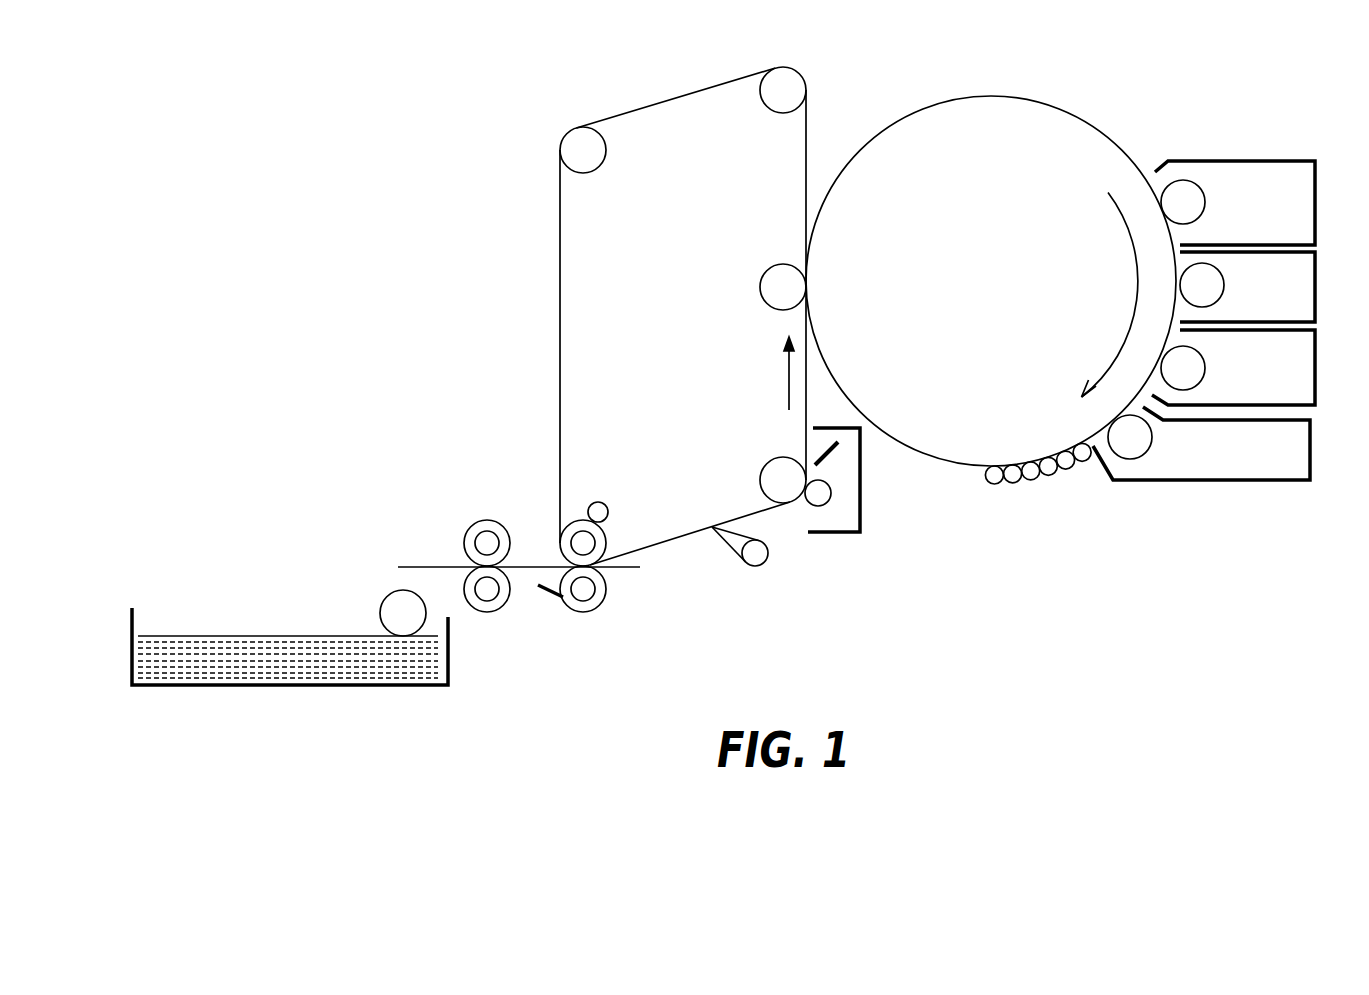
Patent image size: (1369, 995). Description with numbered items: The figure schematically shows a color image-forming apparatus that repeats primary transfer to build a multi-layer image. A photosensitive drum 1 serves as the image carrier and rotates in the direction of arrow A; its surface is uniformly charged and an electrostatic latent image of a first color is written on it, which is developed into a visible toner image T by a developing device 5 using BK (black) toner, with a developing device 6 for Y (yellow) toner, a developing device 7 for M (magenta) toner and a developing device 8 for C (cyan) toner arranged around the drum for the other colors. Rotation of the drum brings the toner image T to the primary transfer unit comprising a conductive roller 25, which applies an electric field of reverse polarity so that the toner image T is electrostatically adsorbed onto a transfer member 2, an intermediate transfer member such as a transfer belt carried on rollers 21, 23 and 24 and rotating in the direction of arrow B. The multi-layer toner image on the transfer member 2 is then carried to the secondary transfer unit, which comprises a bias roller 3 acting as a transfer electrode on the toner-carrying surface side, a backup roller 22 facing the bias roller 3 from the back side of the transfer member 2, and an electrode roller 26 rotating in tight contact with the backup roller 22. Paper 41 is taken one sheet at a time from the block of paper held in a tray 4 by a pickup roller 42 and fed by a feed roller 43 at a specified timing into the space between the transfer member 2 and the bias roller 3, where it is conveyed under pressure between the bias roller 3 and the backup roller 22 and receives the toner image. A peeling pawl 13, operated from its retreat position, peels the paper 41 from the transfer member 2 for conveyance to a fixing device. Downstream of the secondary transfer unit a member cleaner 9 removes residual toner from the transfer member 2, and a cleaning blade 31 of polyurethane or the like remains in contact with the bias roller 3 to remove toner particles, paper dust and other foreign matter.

The photosensitive drum 1 is at (1108, 137).
The transfer member 2 is at (558, 282).
The bias roller 3 is at (602, 600).
The tray 4 is at (335, 688).
The developing device 5 is at (1316, 206).
The developing device 6 is at (1316, 286).
The developing device 7 is at (1316, 366).
The developing device 8 is at (1311, 438).
The member cleaner 9 is at (863, 508).
The peeling pawl 13 is at (770, 558).
The roller 21 is at (798, 72).
The backup roller 22 is at (575, 520).
The roller 23 is at (582, 127).
The roller 24 is at (772, 458).
The conductive roller 25 is at (778, 267).
The electrode roller 26 is at (607, 510).
The cleaning blade 31 is at (547, 590).
The paper 41 is at (267, 635).
The pickup roller 42 is at (389, 592).
The feed roller 43 is at (472, 522).
The arrow A is at (1120, 353).
The arrow B is at (787, 395).
The toner image T is at (1032, 483).